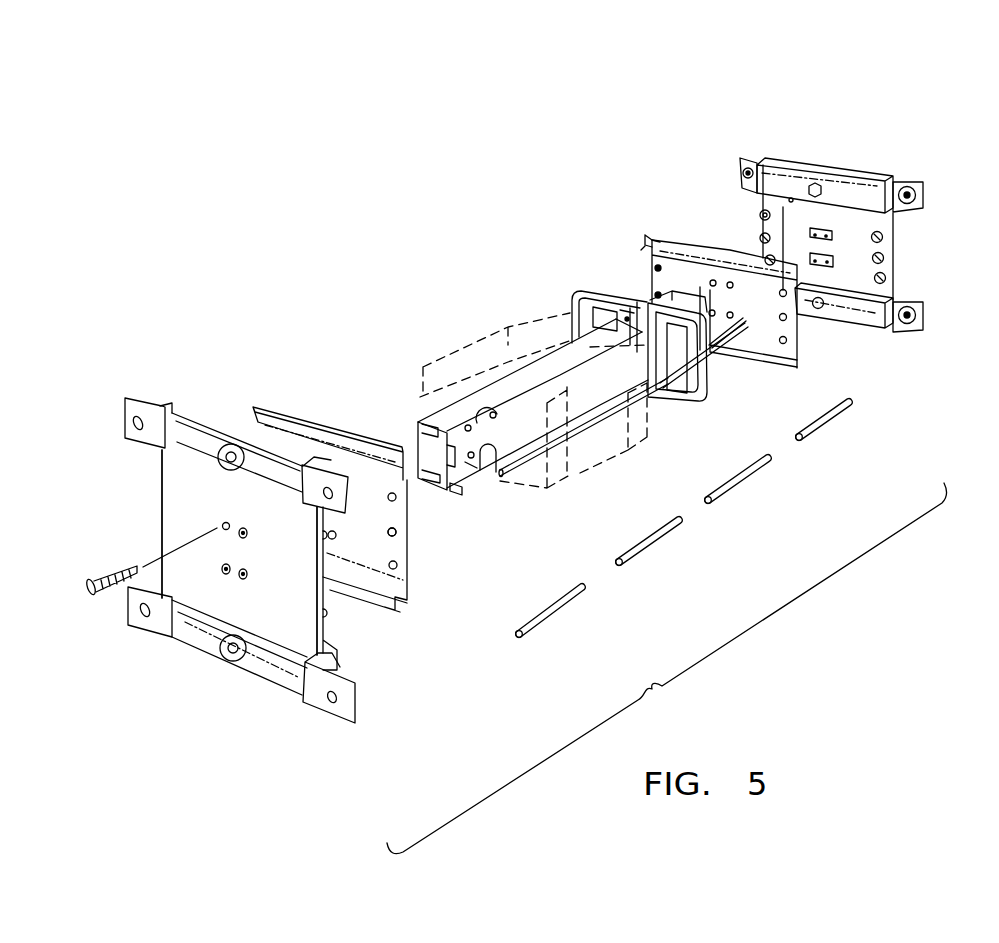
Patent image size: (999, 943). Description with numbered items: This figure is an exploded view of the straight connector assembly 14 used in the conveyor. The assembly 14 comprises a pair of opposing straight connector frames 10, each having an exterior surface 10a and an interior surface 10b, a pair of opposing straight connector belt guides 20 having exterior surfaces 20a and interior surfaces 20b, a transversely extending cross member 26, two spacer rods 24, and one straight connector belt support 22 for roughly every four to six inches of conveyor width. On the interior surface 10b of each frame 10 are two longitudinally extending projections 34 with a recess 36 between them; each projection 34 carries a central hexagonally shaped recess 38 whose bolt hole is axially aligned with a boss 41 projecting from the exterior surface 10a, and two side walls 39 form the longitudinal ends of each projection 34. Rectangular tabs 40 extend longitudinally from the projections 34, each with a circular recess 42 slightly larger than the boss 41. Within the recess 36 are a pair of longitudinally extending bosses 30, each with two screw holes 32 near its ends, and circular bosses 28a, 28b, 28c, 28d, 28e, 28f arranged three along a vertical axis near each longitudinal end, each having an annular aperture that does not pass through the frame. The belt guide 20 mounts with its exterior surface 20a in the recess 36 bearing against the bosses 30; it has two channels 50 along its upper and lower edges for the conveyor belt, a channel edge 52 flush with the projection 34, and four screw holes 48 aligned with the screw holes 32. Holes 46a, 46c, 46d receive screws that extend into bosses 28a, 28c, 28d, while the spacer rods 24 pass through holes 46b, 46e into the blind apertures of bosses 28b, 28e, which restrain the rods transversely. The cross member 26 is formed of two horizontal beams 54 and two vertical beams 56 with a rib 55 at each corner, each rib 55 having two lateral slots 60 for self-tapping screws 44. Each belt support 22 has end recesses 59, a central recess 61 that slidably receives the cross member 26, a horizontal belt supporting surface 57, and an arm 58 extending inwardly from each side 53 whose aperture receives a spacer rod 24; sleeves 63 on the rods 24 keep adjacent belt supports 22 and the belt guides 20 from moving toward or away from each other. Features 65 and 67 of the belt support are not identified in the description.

The straight connector frame 10 is at (255, 688).
The exterior surface 10a is at (187, 488).
The interior surface 10b is at (763, 163).
The straight connector assembly 14 is at (475, 185).
The straight connector belt guide 20 is at (315, 405).
The exterior surface 20a is at (362, 553).
The interior surface 20b is at (755, 340).
The straight connector belt support 22 is at (560, 491).
The spacer rod 24 is at (577, 432).
The cross member 26 is at (526, 352).
The circular boss 28a is at (884, 237).
The circular boss 28b is at (885, 258).
The circular boss 28c is at (886, 278).
The circular boss 28d is at (763, 213).
The circular boss 28e is at (764, 236).
The circular boss 28f is at (766, 258).
The longitudinally extending boss 30 is at (784, 198).
The screw hole 32 is at (229, 444).
The longitudinally extending projection 34 is at (853, 193).
The recess 36 is at (930, 203).
The hexagonally shaped recess 38 is at (815, 198).
The side wall 39 is at (903, 185).
The rectangular tab 40 is at (923, 197).
The boss 41 is at (227, 521).
The circular recess 42 is at (927, 193).
The self-tapping screw 44 is at (132, 572).
The hole 46a is at (785, 317).
The hole 46b is at (397, 532).
The hole 46c is at (786, 293).
The hole 46d is at (658, 266).
The hole 46e is at (658, 293).
The screw hole 48 is at (742, 322).
The channel 50 is at (641, 252).
The channel edge 52 is at (652, 244).
The side 53 is at (603, 288).
The horizontal beam 54 is at (466, 407).
The rib 55 is at (455, 438).
The vertical beam 56 is at (427, 447).
The horizontal belt supporting surface 57 is at (603, 287).
The arm 58 is at (702, 360).
The recess 59 is at (591, 312).
The lateral slot 60 is at (458, 486).
The central recess 61 is at (627, 318).
The sleeve 63 is at (588, 588).
The detent 65 is at (471, 459).
The spring 67 is at (494, 473).